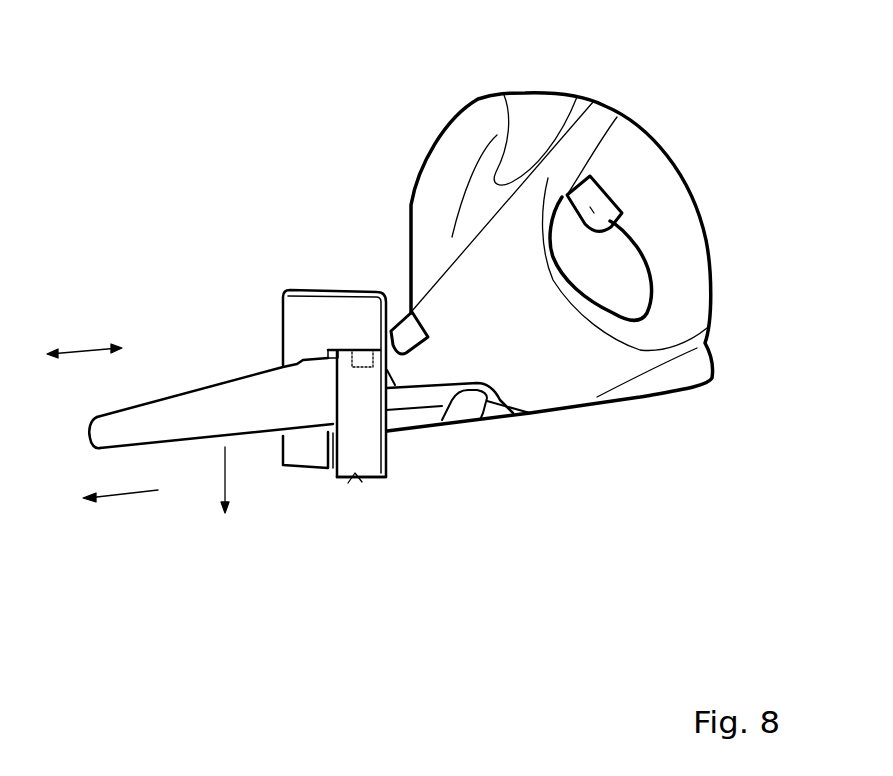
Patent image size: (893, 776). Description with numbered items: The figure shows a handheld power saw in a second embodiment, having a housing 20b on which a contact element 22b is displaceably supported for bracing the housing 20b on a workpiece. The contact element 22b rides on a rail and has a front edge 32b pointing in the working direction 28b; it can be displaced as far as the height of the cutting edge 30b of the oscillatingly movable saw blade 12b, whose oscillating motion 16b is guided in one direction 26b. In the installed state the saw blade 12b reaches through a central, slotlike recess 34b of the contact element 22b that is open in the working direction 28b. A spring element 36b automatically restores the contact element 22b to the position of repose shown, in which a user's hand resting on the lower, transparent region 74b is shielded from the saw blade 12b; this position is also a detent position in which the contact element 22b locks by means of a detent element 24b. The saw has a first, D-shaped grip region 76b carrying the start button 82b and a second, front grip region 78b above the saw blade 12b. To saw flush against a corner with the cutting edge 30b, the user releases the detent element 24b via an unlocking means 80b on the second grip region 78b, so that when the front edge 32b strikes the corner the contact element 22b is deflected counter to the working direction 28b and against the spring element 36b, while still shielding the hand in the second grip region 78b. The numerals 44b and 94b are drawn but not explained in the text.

The saw blade 12b is at (211, 364).
The oscillating motion 16b is at (60, 347).
The housing 20b is at (548, 178).
The contact element 22b is at (300, 330).
The detent element 24b is at (363, 350).
The direction 26b is at (113, 497).
The working direction 28b is at (226, 470).
The cutting edge 30b is at (170, 441).
The front edge 32b is at (356, 477).
The slotlike recess 34b is at (337, 475).
The spring element 36b is at (383, 466).
The saw blade insertion tool 44b is at (222, 405).
The transparent region 74b is at (430, 395).
The grip region 76b is at (662, 228).
The second grip region 78b is at (432, 233).
The unlocking means 80b is at (400, 323).
The start button 82b is at (627, 180).
The locking loop 94b is at (468, 403).